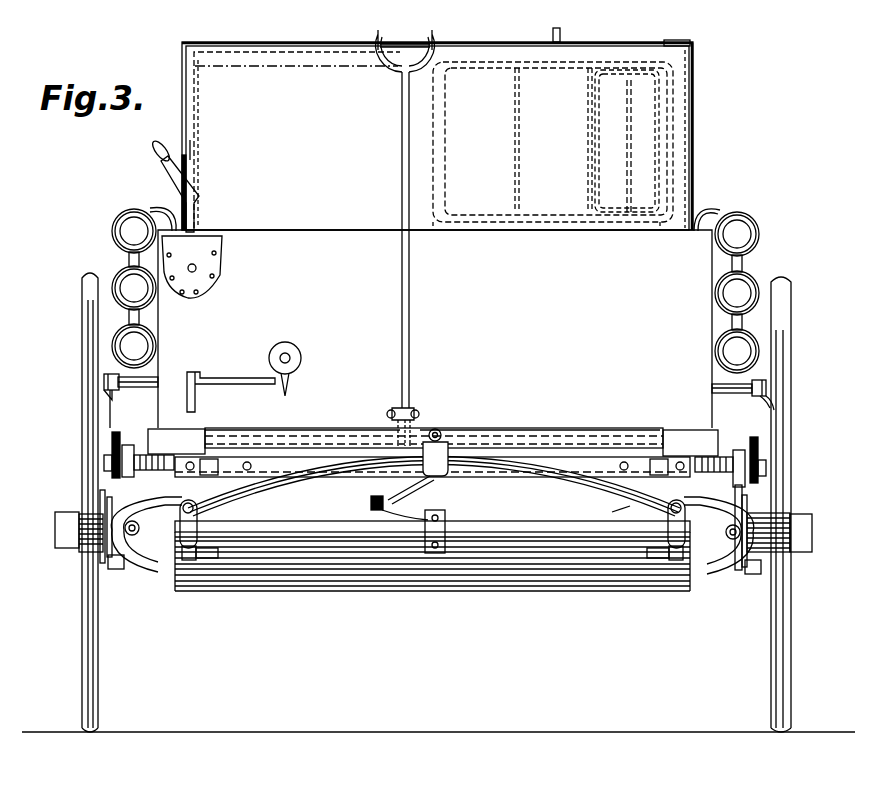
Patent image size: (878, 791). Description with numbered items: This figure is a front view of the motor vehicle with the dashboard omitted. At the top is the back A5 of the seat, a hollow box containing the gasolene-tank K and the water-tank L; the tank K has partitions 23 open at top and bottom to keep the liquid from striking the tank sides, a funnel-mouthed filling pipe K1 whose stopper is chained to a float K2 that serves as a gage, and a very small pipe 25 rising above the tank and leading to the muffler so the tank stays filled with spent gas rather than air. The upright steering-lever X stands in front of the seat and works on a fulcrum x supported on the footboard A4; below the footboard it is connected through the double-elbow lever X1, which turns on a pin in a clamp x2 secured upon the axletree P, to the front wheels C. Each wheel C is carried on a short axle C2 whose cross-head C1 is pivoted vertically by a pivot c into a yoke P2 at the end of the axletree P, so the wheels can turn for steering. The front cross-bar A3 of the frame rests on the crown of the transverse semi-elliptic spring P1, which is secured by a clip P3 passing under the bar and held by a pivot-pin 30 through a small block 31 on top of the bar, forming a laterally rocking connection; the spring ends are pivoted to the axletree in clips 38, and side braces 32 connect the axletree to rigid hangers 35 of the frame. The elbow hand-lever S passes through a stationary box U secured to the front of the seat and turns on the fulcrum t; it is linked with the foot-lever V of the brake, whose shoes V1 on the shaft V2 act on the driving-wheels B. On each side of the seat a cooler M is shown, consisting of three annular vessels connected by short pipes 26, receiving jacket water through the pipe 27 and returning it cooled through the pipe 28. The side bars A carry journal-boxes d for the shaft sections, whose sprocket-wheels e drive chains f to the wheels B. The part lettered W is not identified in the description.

The back of the seat A5 is at (437, 136).
The water-tank L is at (198, 134).
The gasolene-tank K is at (559, 140).
The partitions 23 is at (547, 140).
The float K2 is at (613, 72).
The funnel-mouthed pipe K1 is at (680, 44).
The very small pipe 25 is at (560, 34).
The steering-lever X is at (405, 219).
The stationary box U is at (192, 267).
The fulcrum-pivot t is at (196, 270).
The hand-lever S is at (183, 185).
The cooler M is at (435, 291).
The short pipes 26 is at (129, 258).
The pipe 27 is at (433, 209).
The driving-wheels B is at (435, 502).
The pipe 28 is at (150, 372).
The brake shoes V1 is at (806, 396).
The brake shaft V2 is at (439, 409).
The foot-lever V is at (244, 377).
The side bars A is at (226, 428).
The front cross-bar A3 is at (322, 426).
The footboard A4 is at (548, 440).
The journal-boxes d is at (433, 443).
The sprocket-wheel e is at (435, 452).
The bearing block W is at (122, 472).
The chain f is at (104, 460).
The front wheels C is at (84, 512).
The cross-heads C1 is at (740, 572).
The short axles C2 is at (800, 492).
The pivots c is at (108, 560).
The yokes P2 is at (722, 562).
The rigid hangers 35 is at (212, 508).
The axletree P is at (485, 530).
The spring P1 is at (434, 487).
The clip P3 is at (435, 459).
The pivot-pin 30 is at (440, 432).
The fulcrum x is at (416, 412).
The double-elbow lever X1 is at (408, 490).
The clamp x2 is at (438, 532).
The small block 31 is at (684, 522).
The clips 38 is at (186, 560).
The side braces 32 is at (208, 558).